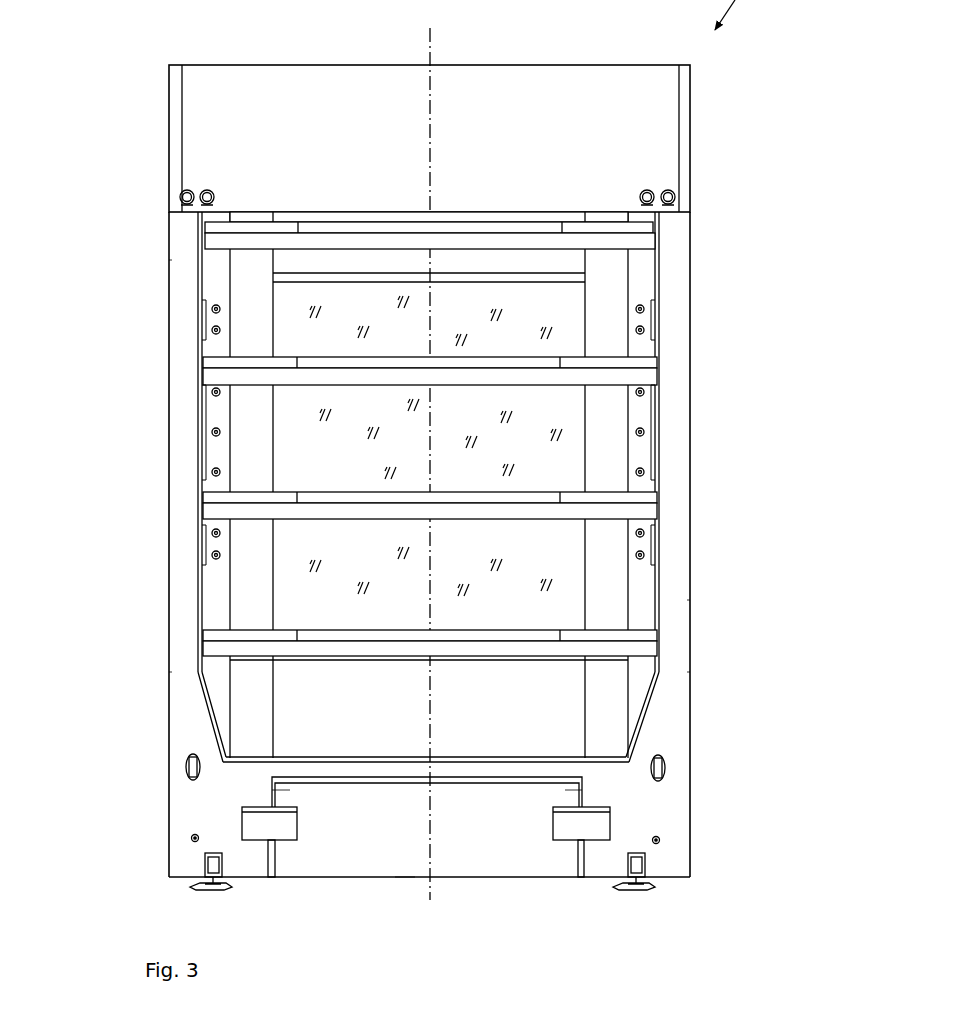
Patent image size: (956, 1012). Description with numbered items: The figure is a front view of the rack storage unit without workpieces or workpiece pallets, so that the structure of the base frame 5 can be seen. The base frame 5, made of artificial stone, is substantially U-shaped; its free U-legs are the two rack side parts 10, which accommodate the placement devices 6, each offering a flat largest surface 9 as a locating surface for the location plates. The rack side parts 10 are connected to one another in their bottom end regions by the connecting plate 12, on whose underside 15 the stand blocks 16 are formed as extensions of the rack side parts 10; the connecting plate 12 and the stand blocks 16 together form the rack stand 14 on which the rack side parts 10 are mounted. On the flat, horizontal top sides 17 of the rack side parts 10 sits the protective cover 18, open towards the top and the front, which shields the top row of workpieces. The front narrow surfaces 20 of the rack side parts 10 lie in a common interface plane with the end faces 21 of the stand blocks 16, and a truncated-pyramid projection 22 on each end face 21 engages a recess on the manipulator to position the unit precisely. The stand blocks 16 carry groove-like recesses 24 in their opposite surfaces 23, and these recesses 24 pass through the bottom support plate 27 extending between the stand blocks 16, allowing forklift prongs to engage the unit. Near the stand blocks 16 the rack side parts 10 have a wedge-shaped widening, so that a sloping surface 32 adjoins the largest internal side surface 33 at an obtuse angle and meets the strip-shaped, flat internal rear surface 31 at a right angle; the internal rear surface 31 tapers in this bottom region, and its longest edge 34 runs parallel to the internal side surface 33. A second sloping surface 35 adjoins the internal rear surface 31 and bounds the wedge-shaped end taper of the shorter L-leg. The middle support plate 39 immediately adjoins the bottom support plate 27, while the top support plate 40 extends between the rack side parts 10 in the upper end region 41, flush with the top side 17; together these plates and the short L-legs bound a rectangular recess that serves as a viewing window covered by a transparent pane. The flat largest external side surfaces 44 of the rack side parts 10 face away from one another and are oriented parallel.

The base frame 5 is at (744, 410).
The placement device 6 is at (615, 512).
The largest surface 9 is at (597, 480).
The rack side part 10 is at (185, 384).
The connecting plate 12 is at (356, 780).
The rack stand 14 is at (150, 870).
The underside 15 is at (463, 797).
The stand block 16 is at (204, 818).
The top side 17 is at (320, 210).
The protective cover 18 is at (222, 88).
The front narrow surface 20 is at (185, 262).
The end face 21 is at (247, 862).
The projection 22 is at (205, 888).
The opposite surfaces 23 is at (292, 782).
The groove-like recess 24 is at (248, 822).
The bottom support plate 27 is at (405, 860).
The internal rear surface 31 is at (215, 605).
The sloping surface 32 is at (210, 695).
The largest internal side surface 33 is at (200, 448).
The longest edge 34 is at (205, 303).
The second sloping surface 35 is at (247, 573).
The middle support plate 39 is at (311, 692).
The top support plate 40 is at (492, 255).
The upper end region 41 is at (185, 237).
The largest external side surface 44 is at (168, 770).